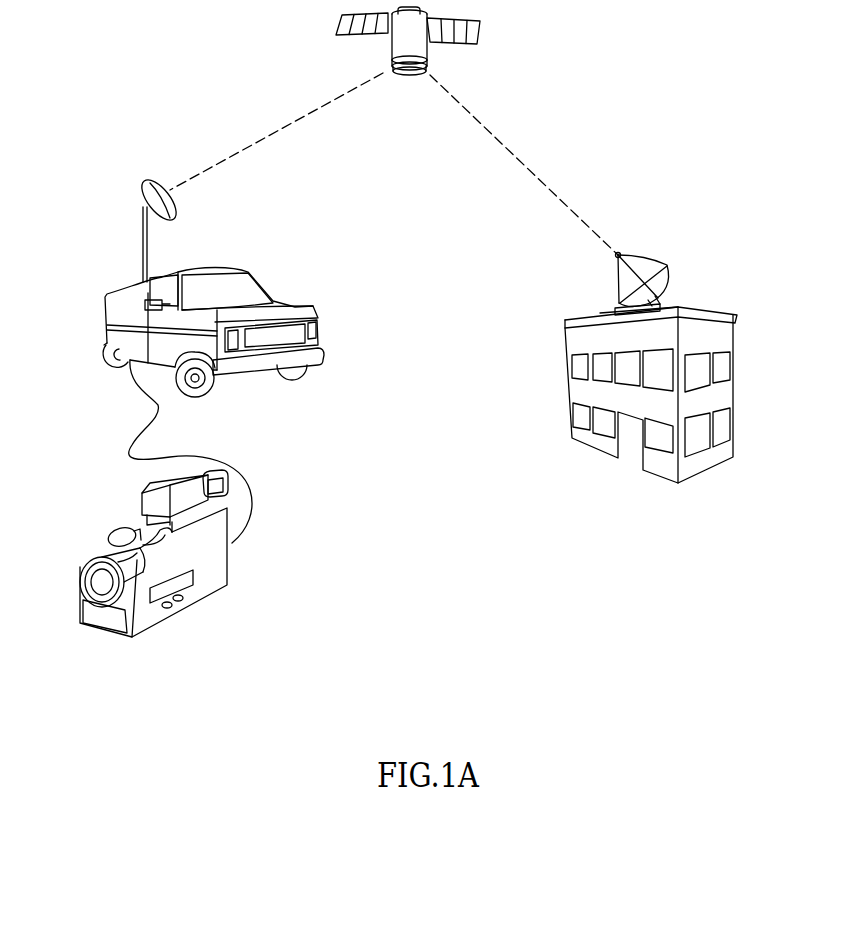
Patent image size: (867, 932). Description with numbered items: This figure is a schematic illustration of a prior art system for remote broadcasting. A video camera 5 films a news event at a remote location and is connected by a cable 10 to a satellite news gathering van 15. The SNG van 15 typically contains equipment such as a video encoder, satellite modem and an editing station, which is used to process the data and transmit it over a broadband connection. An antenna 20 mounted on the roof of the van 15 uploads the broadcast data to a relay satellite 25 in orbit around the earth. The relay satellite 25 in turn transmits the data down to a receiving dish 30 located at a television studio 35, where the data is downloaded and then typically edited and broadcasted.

The video camera 5 is at (210, 573).
The cable 10 is at (147, 424).
The satellite news gathering van 15 is at (118, 300).
The antenna 20 is at (150, 183).
The relay satellite 25 is at (417, 47).
The receiving dish 30 is at (673, 268).
The television studio 35 is at (712, 307).